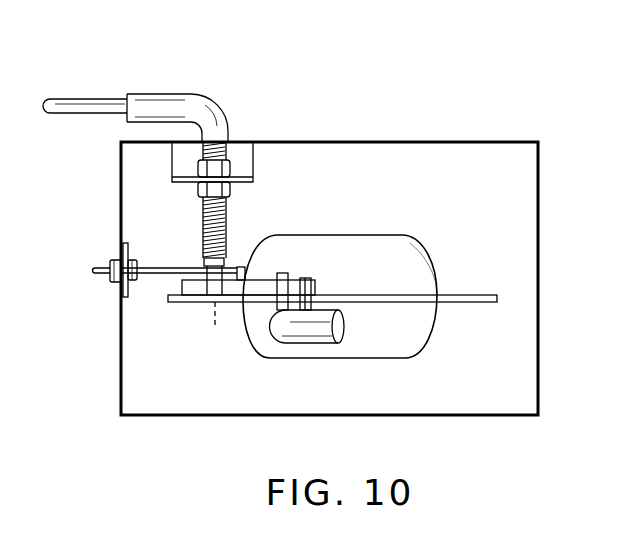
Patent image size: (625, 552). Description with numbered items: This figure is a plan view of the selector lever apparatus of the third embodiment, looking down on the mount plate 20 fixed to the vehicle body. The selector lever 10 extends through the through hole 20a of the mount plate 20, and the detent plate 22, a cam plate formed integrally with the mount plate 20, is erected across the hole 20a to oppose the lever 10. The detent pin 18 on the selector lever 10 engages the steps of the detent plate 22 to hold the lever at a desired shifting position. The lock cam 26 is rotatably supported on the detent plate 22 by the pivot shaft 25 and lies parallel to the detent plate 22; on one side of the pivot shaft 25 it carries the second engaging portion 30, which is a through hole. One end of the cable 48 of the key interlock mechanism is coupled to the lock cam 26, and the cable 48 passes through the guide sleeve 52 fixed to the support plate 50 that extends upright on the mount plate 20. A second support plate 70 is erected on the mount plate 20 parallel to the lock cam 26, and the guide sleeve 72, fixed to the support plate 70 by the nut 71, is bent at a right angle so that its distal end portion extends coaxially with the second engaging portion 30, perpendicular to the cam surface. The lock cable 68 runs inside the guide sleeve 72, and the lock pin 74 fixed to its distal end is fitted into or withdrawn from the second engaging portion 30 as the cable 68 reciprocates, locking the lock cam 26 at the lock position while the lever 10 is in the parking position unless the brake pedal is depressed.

The selector lever 10 is at (291, 345).
The detent pin 18 is at (312, 278).
The mount plate 20 is at (482, 142).
The through hole 20a is at (418, 259).
The detent plate 22 is at (479, 295).
The pivot shaft 25 is at (283, 275).
The lock cam 26 is at (258, 286).
The second engaging portion 30 is at (211, 244).
The cable 48 is at (97, 277).
The support plate 50 is at (124, 250).
The guide sleeve 52 is at (118, 283).
The lock cable 68 is at (77, 97).
The support plate 70 is at (254, 180).
The nut 71 is at (201, 190).
The guide sleeve 72 is at (190, 100).
The lock pin 74 is at (213, 266).